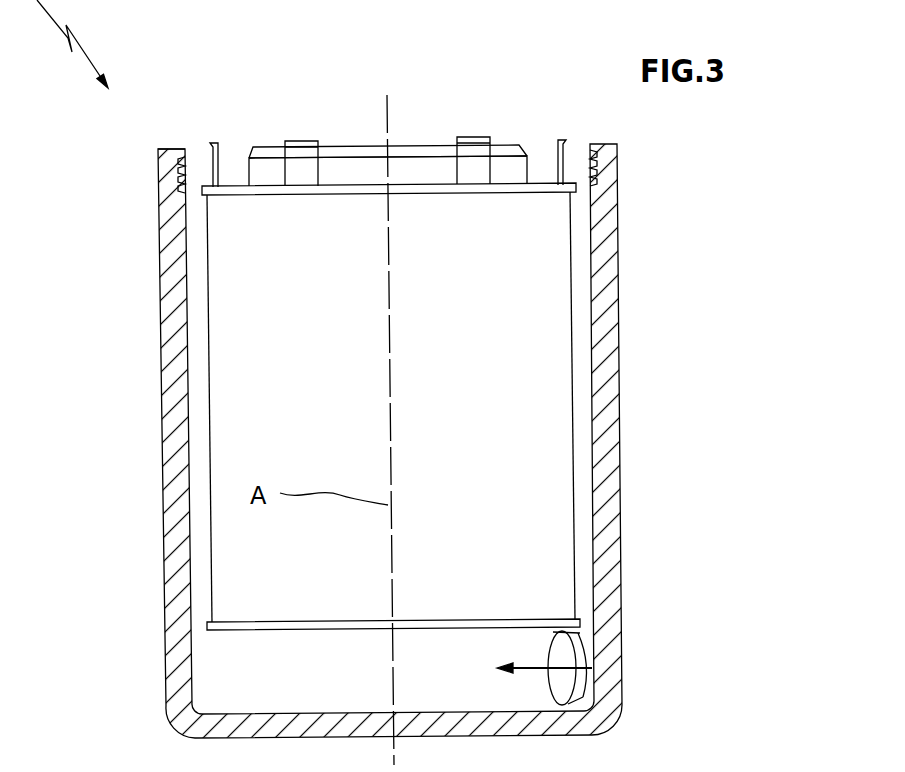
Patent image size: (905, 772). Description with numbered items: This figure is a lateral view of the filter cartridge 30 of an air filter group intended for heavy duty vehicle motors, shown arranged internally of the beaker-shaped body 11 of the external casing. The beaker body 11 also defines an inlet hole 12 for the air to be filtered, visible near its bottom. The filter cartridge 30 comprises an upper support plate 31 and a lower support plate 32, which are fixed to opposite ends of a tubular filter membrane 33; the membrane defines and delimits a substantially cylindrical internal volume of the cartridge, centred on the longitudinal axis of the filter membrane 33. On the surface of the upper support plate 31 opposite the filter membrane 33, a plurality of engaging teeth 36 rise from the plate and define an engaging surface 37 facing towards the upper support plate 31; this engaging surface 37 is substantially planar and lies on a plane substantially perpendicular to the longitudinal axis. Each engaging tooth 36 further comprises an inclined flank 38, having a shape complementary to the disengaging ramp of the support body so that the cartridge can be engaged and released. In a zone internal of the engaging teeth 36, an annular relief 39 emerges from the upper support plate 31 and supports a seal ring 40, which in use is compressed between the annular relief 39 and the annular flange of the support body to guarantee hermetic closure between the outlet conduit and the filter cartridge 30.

The beaker-shaped body 11 is at (614, 515).
The inlet hole 12 is at (567, 685).
The filter cartridge 30 is at (122, 771).
The upper support plate 31 is at (578, 190).
The lower support plate 32 is at (560, 630).
The tubular filter membrane 33 is at (533, 375).
The engaging teeth 36 is at (592, 161).
The engaging surface 37 is at (185, 163).
The inclined flank 38 is at (220, 135).
The annular relief 39 is at (424, 152).
The seal ring 40 is at (346, 148).